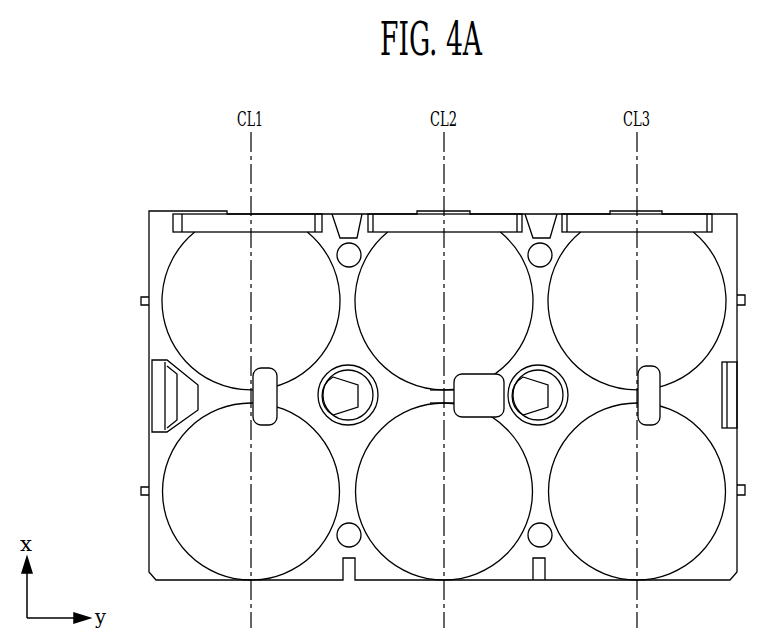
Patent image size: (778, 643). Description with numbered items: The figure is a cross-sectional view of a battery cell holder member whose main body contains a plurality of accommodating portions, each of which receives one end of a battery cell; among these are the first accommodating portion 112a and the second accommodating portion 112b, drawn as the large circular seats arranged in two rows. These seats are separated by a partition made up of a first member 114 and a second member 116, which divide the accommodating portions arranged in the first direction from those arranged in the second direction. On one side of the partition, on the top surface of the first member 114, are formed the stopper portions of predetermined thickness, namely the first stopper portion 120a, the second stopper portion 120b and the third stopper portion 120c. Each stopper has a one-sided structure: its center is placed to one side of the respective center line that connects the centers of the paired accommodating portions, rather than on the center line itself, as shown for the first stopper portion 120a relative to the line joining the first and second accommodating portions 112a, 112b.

The first accommodating portion 112a is at (198, 507).
The second accommodating portion 112b is at (198, 314).
The first member 114 is at (213, 397).
The second member 116 is at (350, 292).
The first stopper portion 120a is at (264, 377).
The second stopper portion 120b is at (480, 383).
The third stopper portion 120c is at (650, 382).